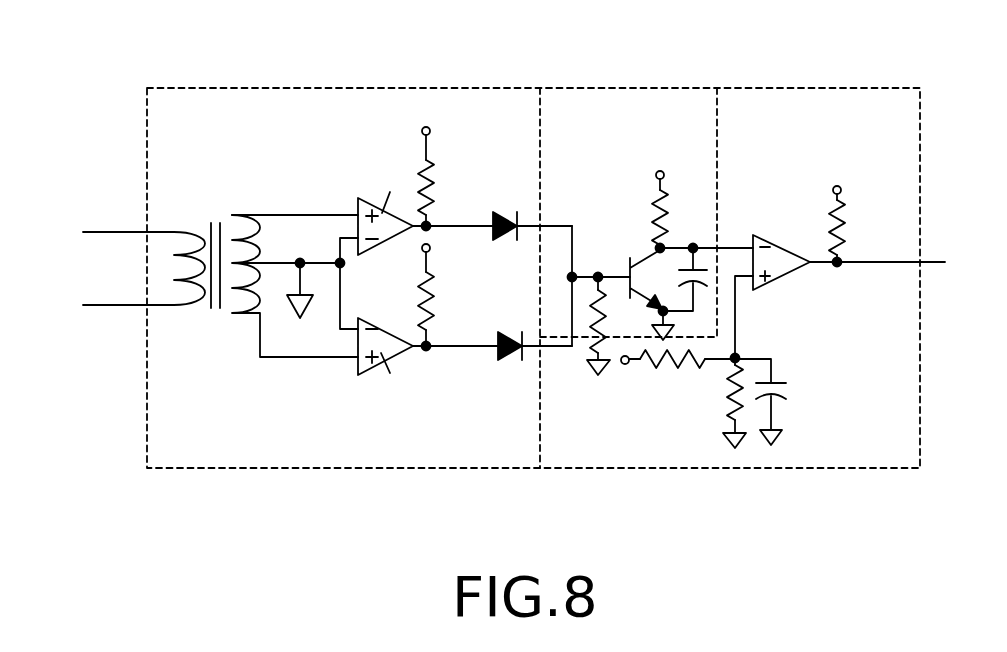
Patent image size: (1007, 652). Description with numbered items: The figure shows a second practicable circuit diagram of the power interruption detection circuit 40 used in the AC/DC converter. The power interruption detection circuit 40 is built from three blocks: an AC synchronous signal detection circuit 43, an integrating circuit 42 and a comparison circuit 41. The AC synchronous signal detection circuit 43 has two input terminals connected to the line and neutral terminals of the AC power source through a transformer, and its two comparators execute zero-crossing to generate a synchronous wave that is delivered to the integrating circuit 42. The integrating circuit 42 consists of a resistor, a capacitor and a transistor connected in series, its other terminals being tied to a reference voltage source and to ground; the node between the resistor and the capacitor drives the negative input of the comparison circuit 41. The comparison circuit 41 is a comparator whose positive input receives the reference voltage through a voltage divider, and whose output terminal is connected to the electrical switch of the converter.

The power interruption detection circuit 40 is at (130, 175).
The comparison circuit 41 is at (804, 454).
The integrating circuit 42 is at (637, 115).
The AC synchronous signal detection circuit 43 is at (307, 460).